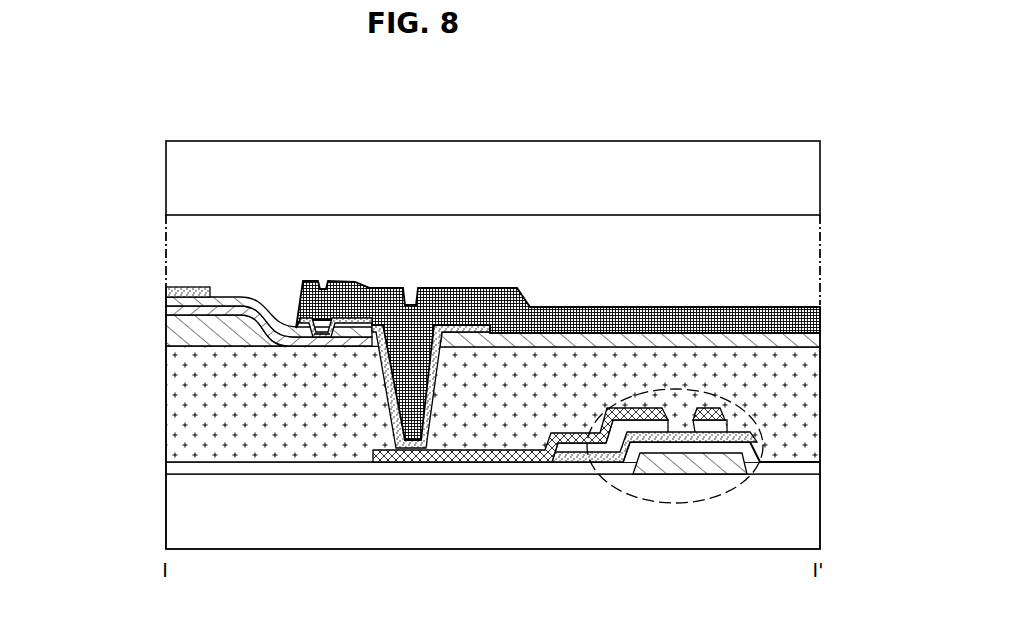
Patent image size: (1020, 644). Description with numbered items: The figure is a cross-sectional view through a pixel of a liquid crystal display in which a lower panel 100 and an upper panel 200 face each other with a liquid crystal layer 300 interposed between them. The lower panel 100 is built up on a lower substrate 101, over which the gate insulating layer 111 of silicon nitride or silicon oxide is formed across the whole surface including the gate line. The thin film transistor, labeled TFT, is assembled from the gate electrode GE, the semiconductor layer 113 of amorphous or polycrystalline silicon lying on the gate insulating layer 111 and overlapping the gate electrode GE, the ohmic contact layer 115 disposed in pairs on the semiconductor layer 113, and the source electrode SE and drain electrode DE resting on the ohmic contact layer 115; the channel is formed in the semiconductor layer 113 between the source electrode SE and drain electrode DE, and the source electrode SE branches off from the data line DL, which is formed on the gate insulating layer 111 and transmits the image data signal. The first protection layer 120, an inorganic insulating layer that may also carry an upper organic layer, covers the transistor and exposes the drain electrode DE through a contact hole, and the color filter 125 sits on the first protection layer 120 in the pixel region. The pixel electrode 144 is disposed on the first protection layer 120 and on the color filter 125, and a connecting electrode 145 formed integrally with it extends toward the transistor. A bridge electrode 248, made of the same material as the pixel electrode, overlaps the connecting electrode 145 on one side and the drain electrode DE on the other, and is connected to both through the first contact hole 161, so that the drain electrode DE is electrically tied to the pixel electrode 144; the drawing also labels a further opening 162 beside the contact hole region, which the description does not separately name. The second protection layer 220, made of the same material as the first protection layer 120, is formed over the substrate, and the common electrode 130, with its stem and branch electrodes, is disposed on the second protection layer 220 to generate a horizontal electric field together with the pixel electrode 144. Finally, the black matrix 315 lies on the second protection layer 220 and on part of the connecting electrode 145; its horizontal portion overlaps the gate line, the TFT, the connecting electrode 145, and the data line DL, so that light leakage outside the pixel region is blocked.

The upper panel 200 is at (832, 140).
The liquid crystal layer 300 is at (798, 260).
The lower panel 100 is at (460, 432).
The lower substrate 101 is at (187, 512).
The gate insulating layer 111 is at (187, 467).
The first protection layer 120 is at (187, 410).
The color filter 125 is at (183, 332).
The common electrode 130 is at (186, 291).
The pixel electrode 144 is at (223, 312).
The connecting electrode 145 is at (336, 330).
The first contact hole 161 is at (320, 338).
The via contact layer 162 is at (420, 369).
The second protection layer 220 is at (176, 303).
The bridge electrode 248 is at (367, 318).
The black matrix 315 is at (558, 338).
The thin film transistor TFT is at (596, 508).
The gate electrode GE is at (667, 466).
The source electrode SE is at (705, 416).
The drain electrode DE is at (570, 456).
The data line DL is at (723, 472).
The semiconductor layer 113 is at (604, 454).
The ohmic contact layer 115 is at (593, 458).